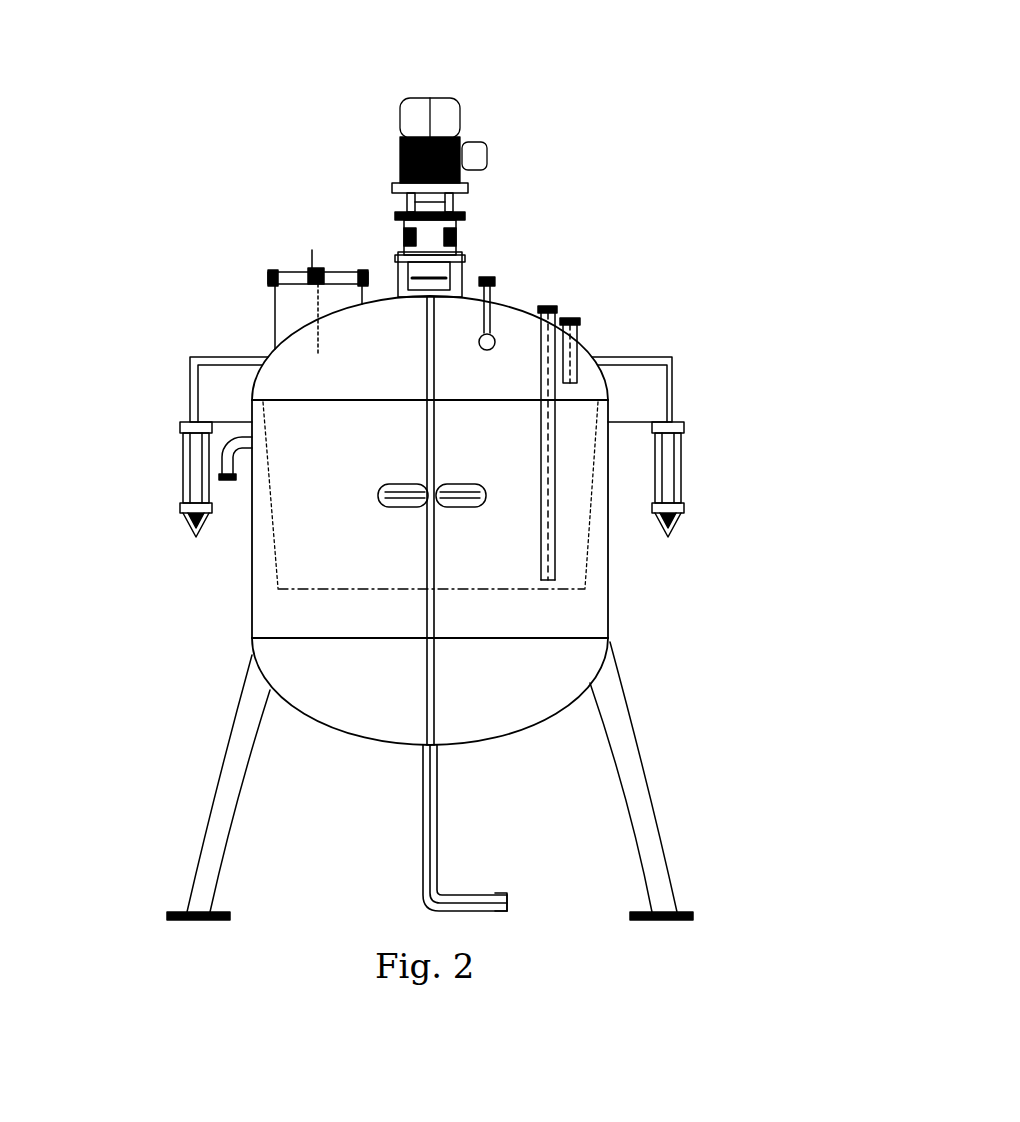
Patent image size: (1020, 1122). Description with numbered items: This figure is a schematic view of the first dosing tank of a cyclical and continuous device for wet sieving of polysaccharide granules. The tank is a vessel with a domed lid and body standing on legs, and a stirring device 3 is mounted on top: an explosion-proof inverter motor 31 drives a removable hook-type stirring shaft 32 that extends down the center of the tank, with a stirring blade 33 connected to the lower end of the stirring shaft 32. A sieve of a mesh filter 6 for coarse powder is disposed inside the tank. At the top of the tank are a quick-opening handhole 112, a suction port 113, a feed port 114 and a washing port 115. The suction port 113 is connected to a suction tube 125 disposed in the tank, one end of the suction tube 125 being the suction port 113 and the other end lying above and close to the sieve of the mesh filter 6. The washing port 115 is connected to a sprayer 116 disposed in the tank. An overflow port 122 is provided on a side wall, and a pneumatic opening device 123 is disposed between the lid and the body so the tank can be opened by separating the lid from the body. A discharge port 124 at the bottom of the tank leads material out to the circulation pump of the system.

The stirring device 3 is at (205, 100).
The explosion-proof inverter motor 31 is at (428, 135).
The stirring shaft 32 is at (420, 405).
The stirring blade 33 is at (380, 485).
The mesh filter for coarse powder 6 is at (590, 578).
The quick-opening handhole 112 is at (318, 272).
The suction port 113 is at (548, 306).
The feed port 114 is at (572, 318).
The washing port 115 is at (487, 285).
The sprayer 116 is at (497, 340).
The overflow port 122 is at (218, 470).
The pneumatic opening device 123 is at (190, 378).
The discharge port 124 is at (485, 893).
The suction tube 125 is at (432, 745).